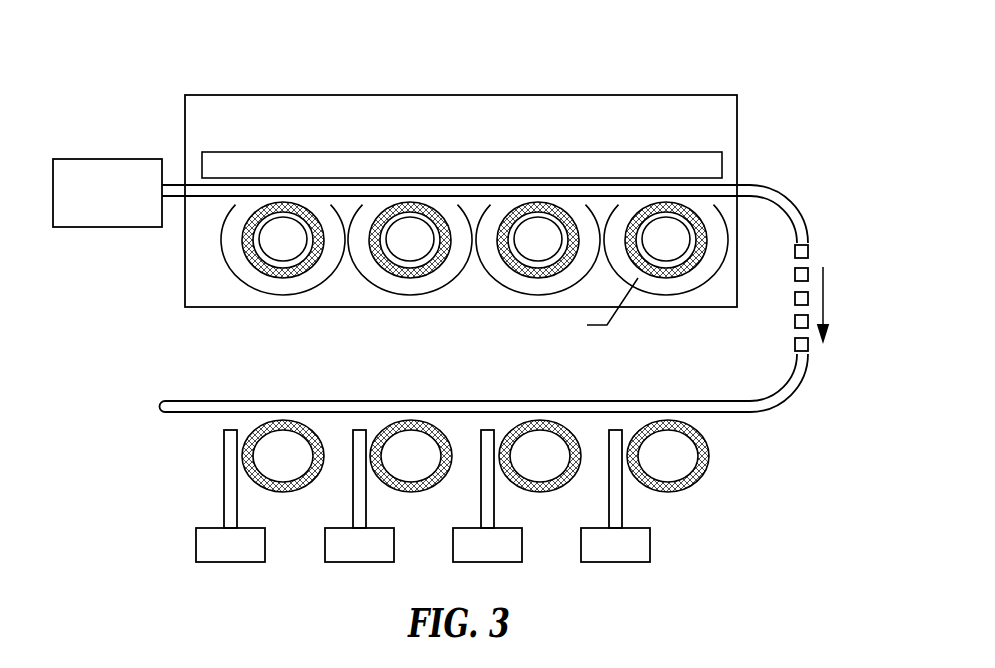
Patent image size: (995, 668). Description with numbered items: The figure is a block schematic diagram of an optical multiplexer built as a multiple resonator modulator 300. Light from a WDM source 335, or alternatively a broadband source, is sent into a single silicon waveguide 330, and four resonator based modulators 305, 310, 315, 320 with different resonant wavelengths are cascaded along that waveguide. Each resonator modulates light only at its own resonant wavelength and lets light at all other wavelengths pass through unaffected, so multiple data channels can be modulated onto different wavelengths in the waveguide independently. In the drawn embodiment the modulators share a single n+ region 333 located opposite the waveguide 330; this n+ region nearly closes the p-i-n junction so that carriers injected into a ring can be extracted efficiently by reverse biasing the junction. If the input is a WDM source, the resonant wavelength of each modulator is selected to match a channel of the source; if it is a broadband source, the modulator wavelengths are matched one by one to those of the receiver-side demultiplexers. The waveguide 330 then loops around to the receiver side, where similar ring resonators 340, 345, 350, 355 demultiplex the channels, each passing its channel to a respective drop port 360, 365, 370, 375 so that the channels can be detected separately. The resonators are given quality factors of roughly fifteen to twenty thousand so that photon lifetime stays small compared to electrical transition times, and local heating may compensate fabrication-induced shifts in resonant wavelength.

The multiple resonator modulator 300 is at (770, 55).
The resonator based modulator 305 is at (257, 275).
The resonator based modulator 310 is at (387, 275).
The resonator based modulator 315 is at (515, 275).
The resonator based modulator 320 is at (690, 272).
The waveguide 330 is at (788, 197).
The n+ region 333 is at (460, 95).
The WDM source 335 is at (107, 159).
The resonator 340 is at (668, 492).
The resonator 345 is at (540, 492).
The resonator 350 is at (411, 492).
The resonator 355 is at (283, 492).
The drop port 360 is at (650, 547).
The drop port 365 is at (522, 547).
The drop port 370 is at (394, 547).
The drop port 375 is at (265, 547).